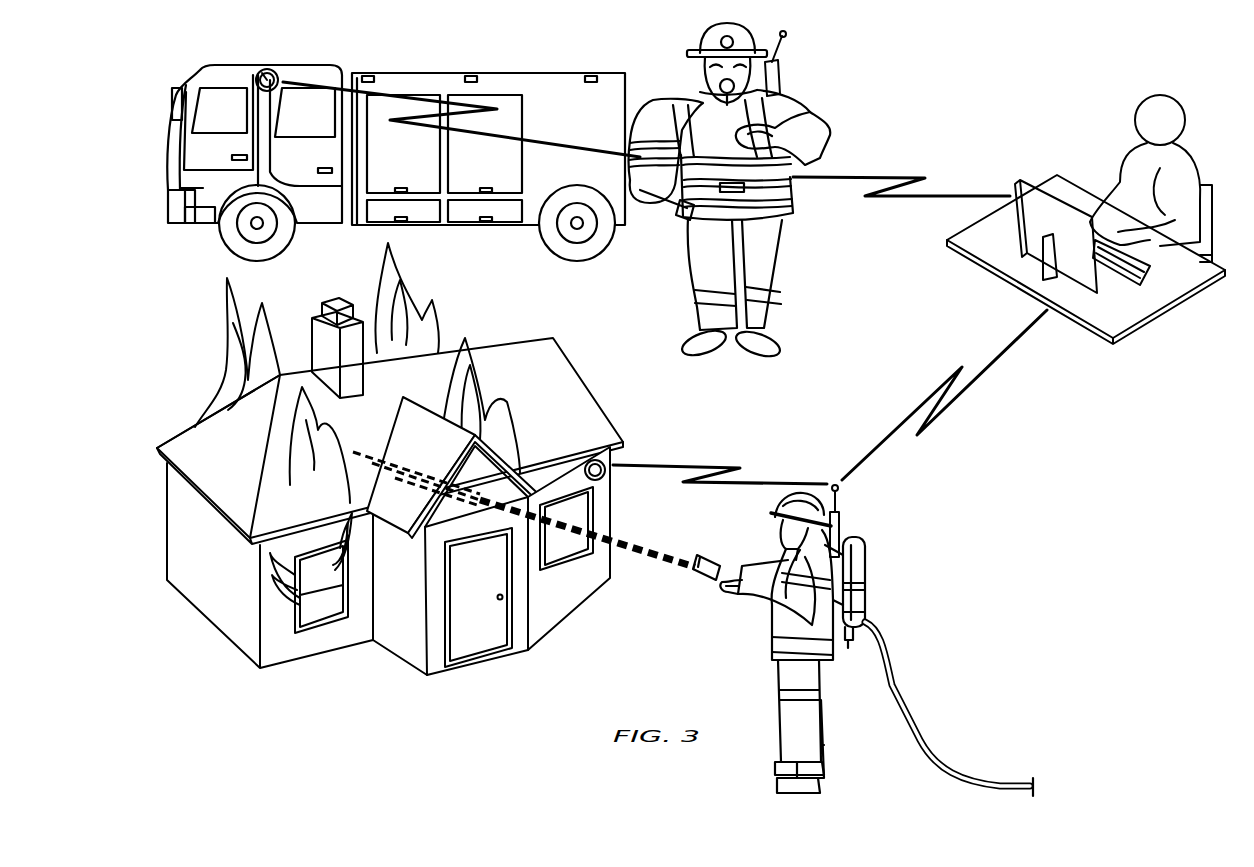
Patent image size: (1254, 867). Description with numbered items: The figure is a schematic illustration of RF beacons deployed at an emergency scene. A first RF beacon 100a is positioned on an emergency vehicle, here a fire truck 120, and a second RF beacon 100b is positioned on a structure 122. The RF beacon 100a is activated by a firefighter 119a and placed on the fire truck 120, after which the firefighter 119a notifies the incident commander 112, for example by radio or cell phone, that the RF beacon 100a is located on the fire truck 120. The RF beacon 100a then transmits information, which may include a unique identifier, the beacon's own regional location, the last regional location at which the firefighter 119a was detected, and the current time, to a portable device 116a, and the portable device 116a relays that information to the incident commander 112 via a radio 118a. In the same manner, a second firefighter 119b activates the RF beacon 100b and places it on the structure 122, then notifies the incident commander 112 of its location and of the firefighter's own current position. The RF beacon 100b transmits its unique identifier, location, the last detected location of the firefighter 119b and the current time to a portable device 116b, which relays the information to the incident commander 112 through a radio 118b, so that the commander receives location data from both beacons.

The RF beacon 100a is at (262, 62).
The RF beacon 100b is at (607, 474).
The incident commander 112 is at (1030, 218).
The portable device 116a is at (779, 80).
The portable device 116b is at (842, 516).
The radio 118a is at (786, 37).
The radio 118b is at (841, 489).
The firefighter 119a is at (688, 258).
The firefighter 119b is at (784, 561).
The fire truck 120 is at (170, 140).
The structure 122 is at (600, 397).